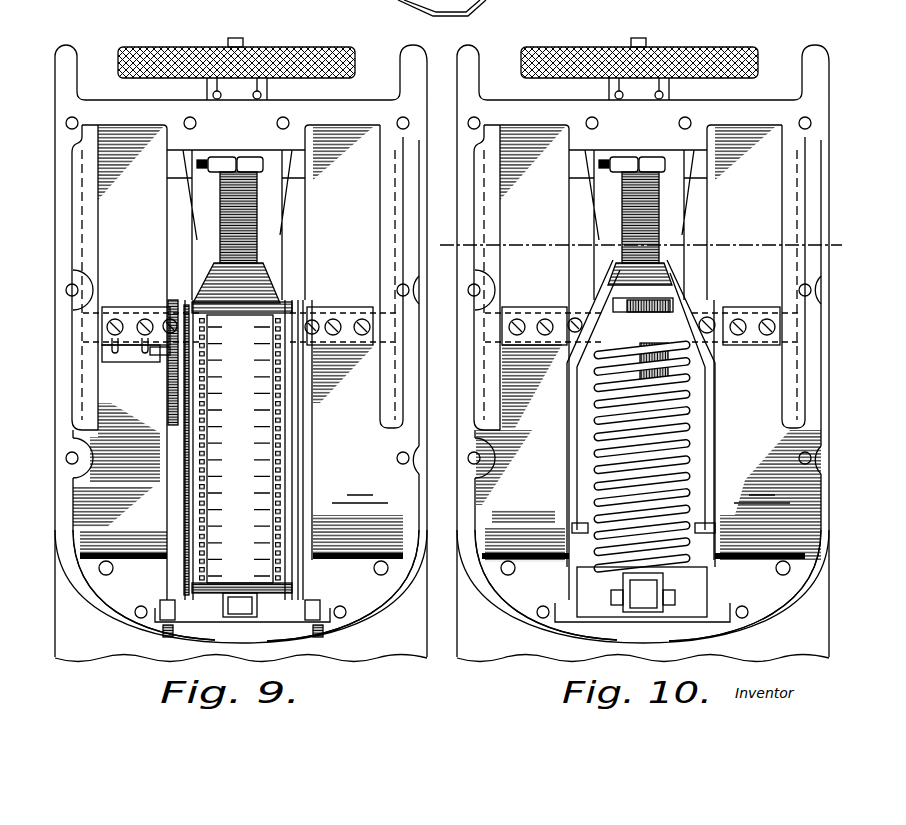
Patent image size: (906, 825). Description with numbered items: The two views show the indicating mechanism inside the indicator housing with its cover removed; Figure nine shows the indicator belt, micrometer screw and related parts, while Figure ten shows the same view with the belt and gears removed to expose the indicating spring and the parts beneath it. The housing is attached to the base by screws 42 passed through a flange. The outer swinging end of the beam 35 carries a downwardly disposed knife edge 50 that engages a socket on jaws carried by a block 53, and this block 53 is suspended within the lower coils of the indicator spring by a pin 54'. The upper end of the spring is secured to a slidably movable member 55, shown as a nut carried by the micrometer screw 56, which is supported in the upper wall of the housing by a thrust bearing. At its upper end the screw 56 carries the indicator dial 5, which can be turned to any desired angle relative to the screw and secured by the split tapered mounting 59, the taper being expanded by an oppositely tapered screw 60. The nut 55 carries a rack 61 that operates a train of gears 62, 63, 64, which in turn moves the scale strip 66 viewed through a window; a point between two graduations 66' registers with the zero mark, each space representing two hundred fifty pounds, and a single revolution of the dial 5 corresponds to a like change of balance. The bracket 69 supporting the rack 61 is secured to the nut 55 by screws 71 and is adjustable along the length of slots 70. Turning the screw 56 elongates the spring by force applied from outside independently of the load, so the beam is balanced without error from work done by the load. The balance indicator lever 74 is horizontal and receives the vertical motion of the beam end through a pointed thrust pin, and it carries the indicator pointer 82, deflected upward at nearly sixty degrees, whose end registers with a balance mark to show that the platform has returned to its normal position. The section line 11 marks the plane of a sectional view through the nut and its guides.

In FIG. 9, the indicator dial 5 is at (356, 48).
In FIG. 10, the indicator dial 5 is at (747, 48).
In FIG. 9, the oppositely tapered screw 60 is at (244, 40).
In FIG. 10, the oppositely tapered screw 60 is at (640, 38).
In FIG. 9, the split tapered mounting 59 is at (268, 92).
In FIG. 10, the split tapered mounting 59 is at (672, 92).
In FIG. 9, the micrometer screw 56 is at (222, 205).
In FIG. 9, the indicator pointer 82 is at (258, 283).
In FIG. 10, the indicator pointer 82 is at (597, 307).
In FIG. 9, the scale strip 66 is at (279, 423).
In FIG. 9, the graduations 66' is at (275, 409).
In FIG. 9, the gear 64 is at (167, 310).
In FIG. 9, the bracket 69 is at (127, 307).
In FIG. 9, the slots 70 is at (118, 312).
In FIG. 9, the gear 63 is at (178, 312).
In FIG. 9, the screws 71 is at (133, 340).
In FIG. 9, the gear 62 is at (166, 398).
In FIG. 9, the rack 61 is at (152, 548).
In FIG. 9, the beam 35 is at (242, 600).
In FIG. 10, the beam 35 is at (643, 592).
In FIG. 9, the knife edge 50 is at (207, 607).
In FIG. 10, the knife edge 50 is at (673, 593).
In FIG. 9, the block 53 is at (262, 607).
In FIG. 10, the block 53 is at (607, 573).
In FIG. 9, the screws 42 is at (282, 613).
In FIG. 10, the screws 42 is at (688, 607).
In FIG. 10, the section line 11 is at (836, 245).
In FIG. 10, the slidably movable member 55 is at (653, 345).
In FIG. 10, the pin 54' is at (678, 456).
In FIG. 10, the balance indicator lever 74 is at (577, 538).